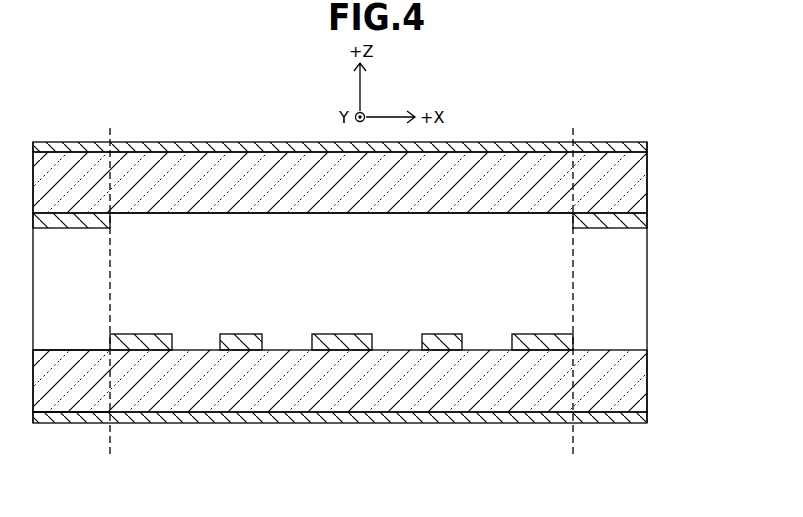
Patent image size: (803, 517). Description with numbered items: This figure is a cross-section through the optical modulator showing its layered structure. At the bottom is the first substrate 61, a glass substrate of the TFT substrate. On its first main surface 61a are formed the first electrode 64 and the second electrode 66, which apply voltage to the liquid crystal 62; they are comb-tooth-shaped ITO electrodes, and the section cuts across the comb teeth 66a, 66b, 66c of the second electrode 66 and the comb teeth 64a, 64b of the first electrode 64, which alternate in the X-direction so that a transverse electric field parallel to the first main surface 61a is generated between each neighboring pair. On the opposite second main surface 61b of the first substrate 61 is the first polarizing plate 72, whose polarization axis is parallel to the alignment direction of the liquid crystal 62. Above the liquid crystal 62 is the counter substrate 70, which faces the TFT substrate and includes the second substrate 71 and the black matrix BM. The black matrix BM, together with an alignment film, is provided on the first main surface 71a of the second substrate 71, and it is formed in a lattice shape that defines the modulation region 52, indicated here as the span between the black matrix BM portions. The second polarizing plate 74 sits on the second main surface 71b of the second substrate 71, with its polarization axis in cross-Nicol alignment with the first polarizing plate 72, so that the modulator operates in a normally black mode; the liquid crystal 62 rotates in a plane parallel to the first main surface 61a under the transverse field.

The counter substrate 70 is at (401, 214).
The second polarizing plate 74 is at (647, 143).
The second substrate 71 is at (647, 190).
The first main surface 71a is at (200, 228).
The second main surface 71b is at (147, 157).
The black matrix BM is at (377, 251).
The liquid crystal 62 is at (647, 278).
The second electrode 66 is at (345, 313).
The comb tooth 66a is at (145, 333).
The comb tooth 66b is at (345, 333).
The comb tooth 66c is at (545, 333).
The first electrode 64 is at (351, 313).
The comb tooth 64a is at (245, 333).
The comb tooth 64b is at (445, 333).
The first substrate 61 is at (647, 383).
The first main surface 61a is at (72, 348).
The second main surface 61b is at (65, 405).
The first polarizing plate 72 is at (647, 416).
The modulation region 52 is at (573, 452).